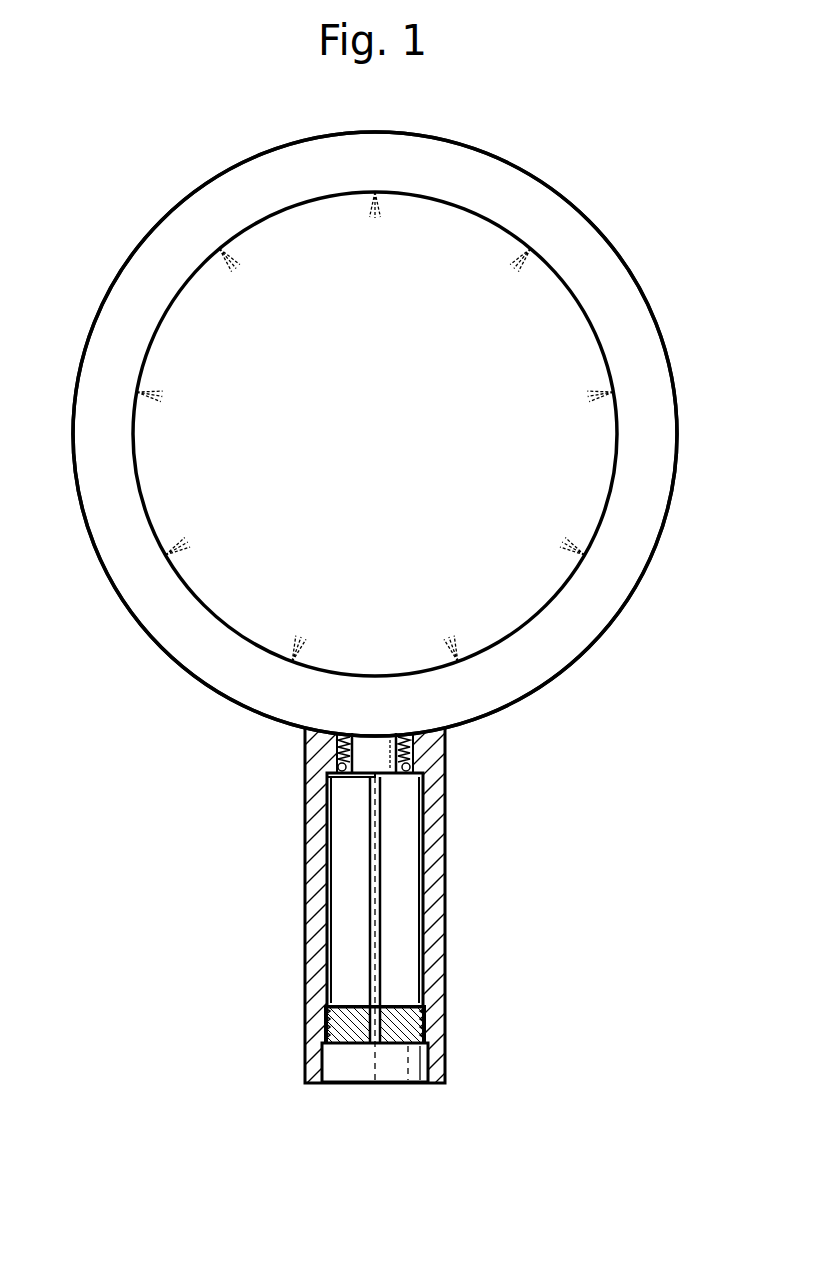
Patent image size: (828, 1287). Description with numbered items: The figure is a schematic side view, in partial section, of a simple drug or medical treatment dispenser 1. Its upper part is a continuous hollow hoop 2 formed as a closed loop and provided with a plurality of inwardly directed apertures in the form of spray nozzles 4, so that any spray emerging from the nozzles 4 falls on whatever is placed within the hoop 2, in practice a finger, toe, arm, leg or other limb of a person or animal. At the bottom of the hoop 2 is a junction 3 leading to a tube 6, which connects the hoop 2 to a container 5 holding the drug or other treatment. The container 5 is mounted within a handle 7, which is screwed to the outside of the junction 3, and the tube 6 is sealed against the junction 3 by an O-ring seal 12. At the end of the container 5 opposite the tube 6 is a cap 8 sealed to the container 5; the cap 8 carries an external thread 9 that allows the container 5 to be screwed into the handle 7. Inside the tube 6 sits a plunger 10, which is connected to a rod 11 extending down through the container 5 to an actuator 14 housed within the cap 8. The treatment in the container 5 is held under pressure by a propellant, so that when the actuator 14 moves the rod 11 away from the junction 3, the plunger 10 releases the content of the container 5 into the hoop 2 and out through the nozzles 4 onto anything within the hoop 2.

The dispenser 1 is at (623, 236).
The hollow hoop 2 is at (127, 300).
The junction 3 is at (413, 747).
The spray nozzles 4 is at (148, 408).
The container 5 is at (405, 875).
The tube 6 is at (338, 748).
The handle 7 is at (445, 950).
The cap 8 is at (403, 1027).
The external thread 9 is at (322, 1023).
The plunger 10 is at (388, 768).
The rod 11 is at (370, 903).
The O-ring seal 12 is at (343, 778).
The actuator 14 is at (358, 1073).